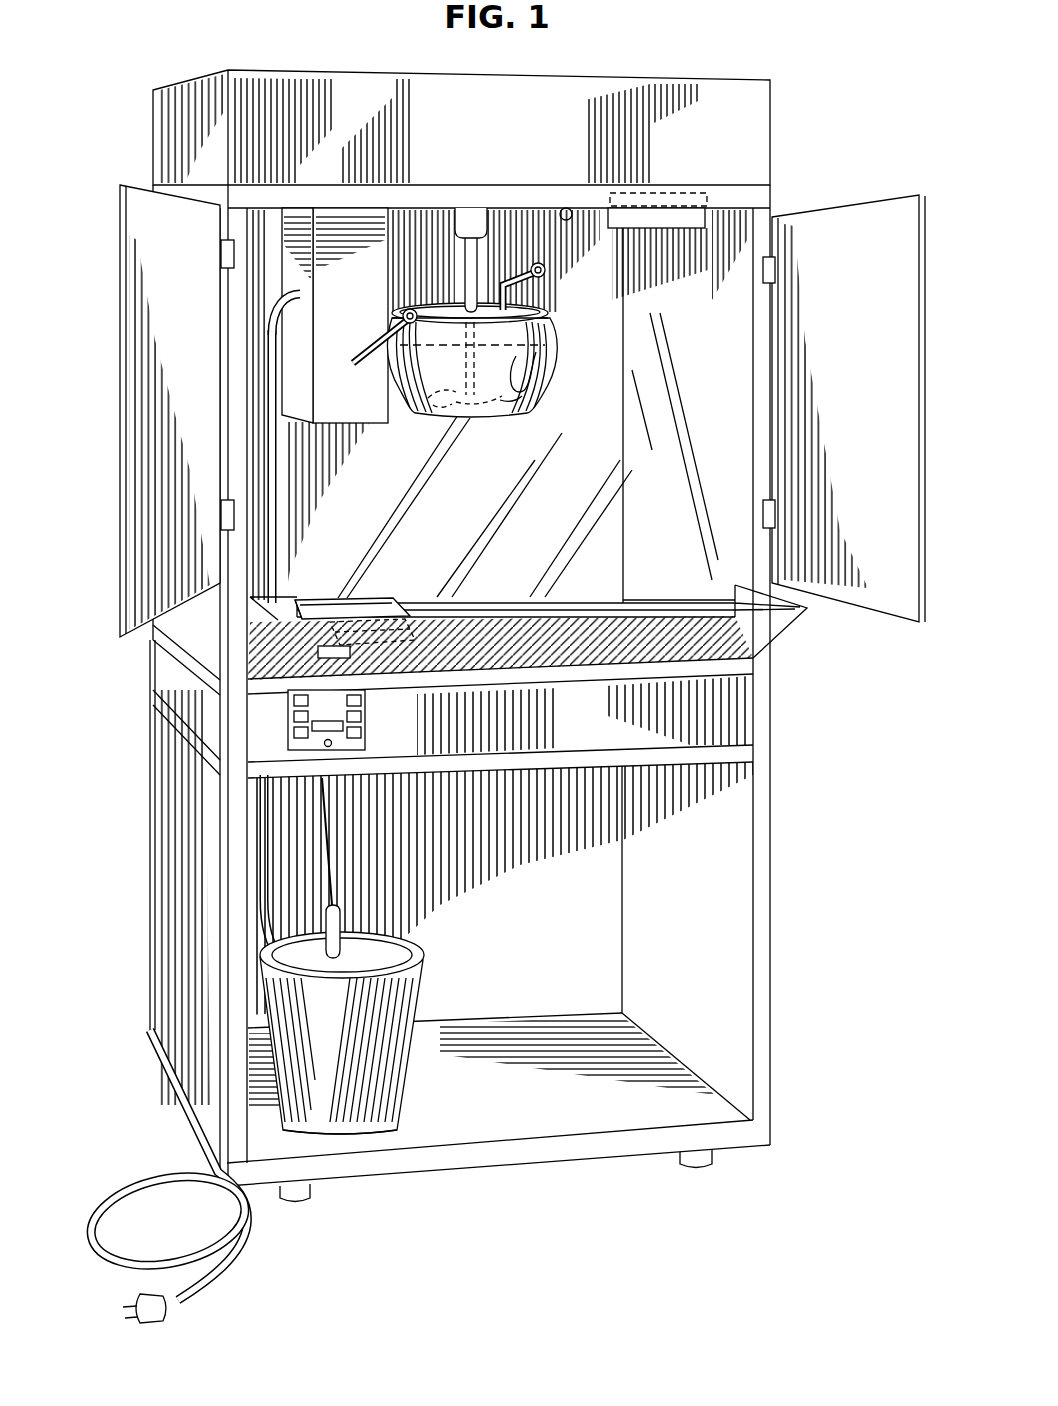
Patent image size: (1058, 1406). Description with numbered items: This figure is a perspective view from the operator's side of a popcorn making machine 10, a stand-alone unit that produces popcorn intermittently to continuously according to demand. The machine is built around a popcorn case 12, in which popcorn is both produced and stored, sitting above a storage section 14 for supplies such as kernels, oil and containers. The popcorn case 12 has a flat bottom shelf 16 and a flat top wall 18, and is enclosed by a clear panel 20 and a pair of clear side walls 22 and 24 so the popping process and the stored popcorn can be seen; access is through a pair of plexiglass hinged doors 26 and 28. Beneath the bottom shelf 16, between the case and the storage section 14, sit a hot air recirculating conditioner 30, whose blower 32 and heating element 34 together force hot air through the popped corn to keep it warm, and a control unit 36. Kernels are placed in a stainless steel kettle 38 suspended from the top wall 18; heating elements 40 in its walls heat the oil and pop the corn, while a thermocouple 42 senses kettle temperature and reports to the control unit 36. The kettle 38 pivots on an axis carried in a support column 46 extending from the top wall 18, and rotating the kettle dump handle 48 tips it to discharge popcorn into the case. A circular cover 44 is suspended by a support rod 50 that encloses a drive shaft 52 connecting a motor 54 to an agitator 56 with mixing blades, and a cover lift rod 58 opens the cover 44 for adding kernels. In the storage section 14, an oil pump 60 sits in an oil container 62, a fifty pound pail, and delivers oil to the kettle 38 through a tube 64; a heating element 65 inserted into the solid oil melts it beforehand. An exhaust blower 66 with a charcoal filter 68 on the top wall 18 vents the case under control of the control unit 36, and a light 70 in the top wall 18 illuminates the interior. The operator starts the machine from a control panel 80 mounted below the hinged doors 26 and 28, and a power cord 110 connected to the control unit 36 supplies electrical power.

The popcorn making machine 10 is at (822, 80).
The popcorn case 12 is at (600, 556).
The storage section 14 is at (727, 1027).
The bottom shelf 16 is at (504, 600).
The top wall 18 is at (580, 208).
The panel 20 is at (608, 380).
The side wall 22 is at (775, 290).
The side wall 24 is at (168, 660).
The hinged door 26 is at (900, 600).
The hinged door 28 is at (153, 234).
The hot air recirculating conditioner 30 is at (312, 600).
The blower 32 is at (418, 637).
The heating element 34 is at (245, 662).
The control unit 36 is at (256, 770).
The kettle 38 is at (556, 392).
The heating elements 40 is at (535, 392).
The thermocouple 42 is at (416, 414).
The cover 44 is at (550, 305).
The support column 46 is at (300, 294).
The kettle dump handle 48 is at (352, 362).
The support rod 50 is at (465, 260).
The drive shaft 52 is at (546, 358).
The motor 54 is at (468, 222).
The agitator 56 is at (460, 410).
The cover lift rod 58 is at (538, 262).
The oil pump 60 is at (262, 963).
The oil container 62 is at (353, 1130).
The tube 64 is at (262, 472).
The heating element 65 is at (342, 922).
The exhaust blower 66 is at (650, 208).
The charcoal filter 68 is at (683, 195).
The light 70 is at (283, 95).
The control panel 80 is at (286, 736).
The power cord 110 is at (250, 1262).